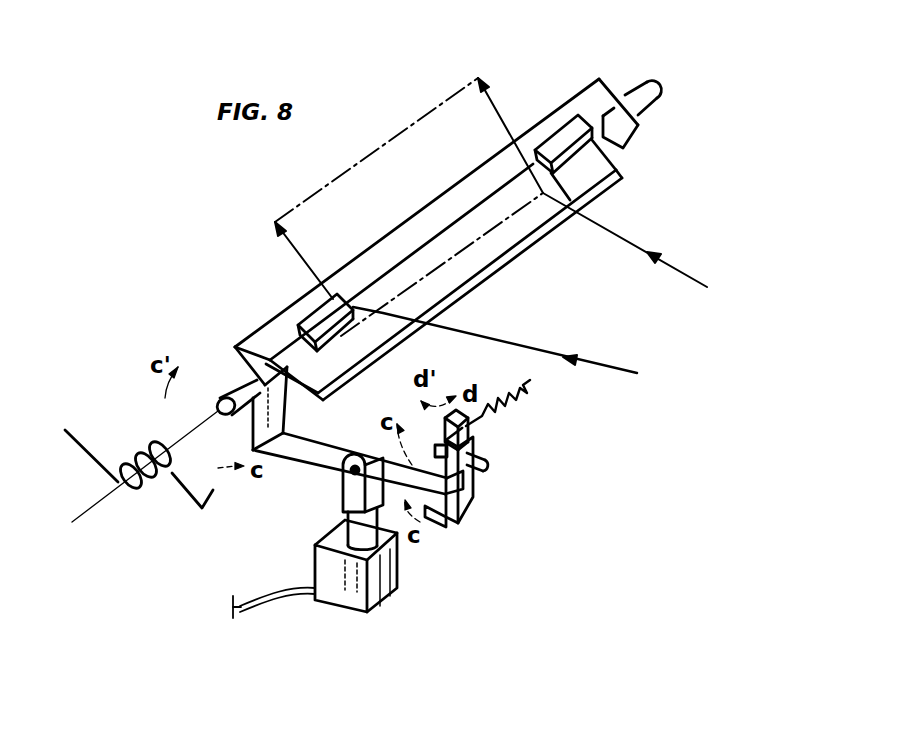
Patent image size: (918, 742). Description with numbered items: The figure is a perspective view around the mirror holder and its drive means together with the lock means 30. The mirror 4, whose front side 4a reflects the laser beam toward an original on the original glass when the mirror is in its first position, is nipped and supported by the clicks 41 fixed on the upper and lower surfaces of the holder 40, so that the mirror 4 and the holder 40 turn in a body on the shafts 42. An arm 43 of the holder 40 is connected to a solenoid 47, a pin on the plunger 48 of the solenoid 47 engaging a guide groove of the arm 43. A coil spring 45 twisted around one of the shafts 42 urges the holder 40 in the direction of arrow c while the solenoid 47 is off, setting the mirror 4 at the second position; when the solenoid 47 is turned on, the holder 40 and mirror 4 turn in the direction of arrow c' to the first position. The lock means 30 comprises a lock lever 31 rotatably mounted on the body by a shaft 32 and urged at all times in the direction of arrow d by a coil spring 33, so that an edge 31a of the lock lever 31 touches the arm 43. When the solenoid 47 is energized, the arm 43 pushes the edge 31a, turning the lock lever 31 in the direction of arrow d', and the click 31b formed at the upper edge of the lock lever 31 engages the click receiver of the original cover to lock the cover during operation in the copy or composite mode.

The mirror 4 is at (612, 188).
The front side of the mirror 4a is at (507, 240).
The holder 40 is at (578, 92).
The clicks 41 is at (320, 318).
The shafts 42 is at (233, 383).
The arm 43 is at (308, 462).
The coil spring 45 is at (133, 452).
The solenoid 47 is at (343, 600).
The plunger 48 is at (330, 502).
The lock means 30 is at (478, 502).
The lock lever 31 is at (455, 503).
The edge of the lock lever 31a is at (438, 527).
The click of the lock lever 31b is at (443, 422).
The shaft of the lock lever 32 is at (487, 463).
The coil spring of the lock lever 33 is at (510, 420).